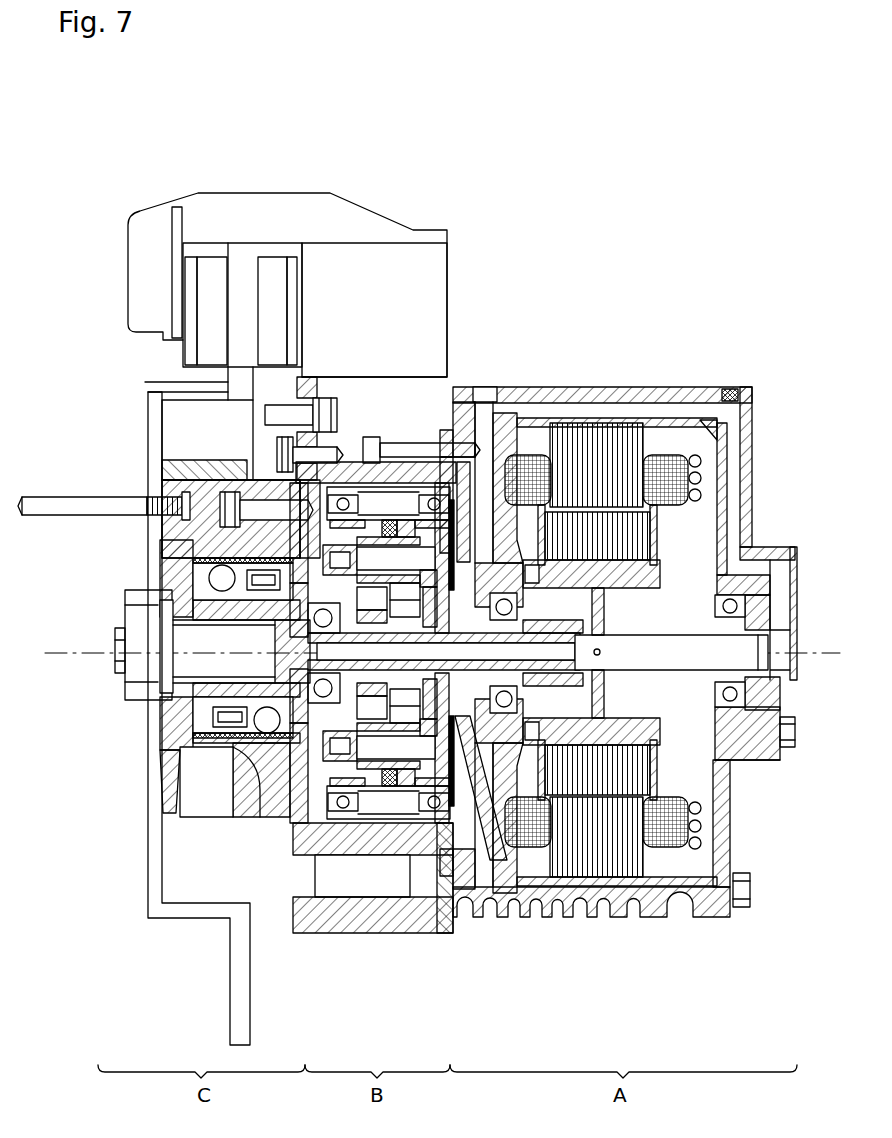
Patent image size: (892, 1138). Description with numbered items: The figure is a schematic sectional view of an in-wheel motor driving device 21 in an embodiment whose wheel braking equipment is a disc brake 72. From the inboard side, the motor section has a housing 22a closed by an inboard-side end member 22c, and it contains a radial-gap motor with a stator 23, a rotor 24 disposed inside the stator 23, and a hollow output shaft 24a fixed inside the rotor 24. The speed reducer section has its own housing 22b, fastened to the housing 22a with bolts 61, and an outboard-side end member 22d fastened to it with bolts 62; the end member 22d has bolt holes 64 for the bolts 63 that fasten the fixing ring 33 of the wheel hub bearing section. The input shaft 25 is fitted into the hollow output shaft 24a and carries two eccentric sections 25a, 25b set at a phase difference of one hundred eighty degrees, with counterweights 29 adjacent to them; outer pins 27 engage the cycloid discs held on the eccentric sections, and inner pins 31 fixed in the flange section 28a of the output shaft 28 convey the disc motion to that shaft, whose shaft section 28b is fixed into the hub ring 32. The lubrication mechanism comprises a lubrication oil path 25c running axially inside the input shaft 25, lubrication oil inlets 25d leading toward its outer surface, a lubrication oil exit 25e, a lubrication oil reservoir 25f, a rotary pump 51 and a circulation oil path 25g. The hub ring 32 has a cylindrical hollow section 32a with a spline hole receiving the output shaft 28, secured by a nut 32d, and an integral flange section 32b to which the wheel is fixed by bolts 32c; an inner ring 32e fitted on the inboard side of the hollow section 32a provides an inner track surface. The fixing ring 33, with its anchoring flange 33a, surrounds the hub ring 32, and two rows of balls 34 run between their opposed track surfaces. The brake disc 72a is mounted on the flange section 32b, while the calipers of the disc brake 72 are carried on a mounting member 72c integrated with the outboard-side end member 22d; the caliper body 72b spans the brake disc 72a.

The in-wheel motor driving device 21 is at (445, 132).
The housing of the motor section 22a is at (610, 591).
The housing of the speed reducer section 22b is at (430, 445).
The inboard-side end member 22c is at (752, 400).
The outboard-side end member 22d is at (480, 440).
The stator 23 is at (625, 405).
The rotor 24 is at (665, 540).
The hollow output shaft 24a is at (700, 588).
The input shaft 25 is at (613, 717).
The eccentric section 25a is at (413, 853).
The eccentric section 25b is at (368, 837).
The lubrication oil path 25c is at (705, 690).
The lubrication oil inlets 25d is at (490, 700).
The lubrication oil exit 25e is at (390, 837).
The lubrication oil reservoir 25f is at (372, 863).
The circulation oil path 25g is at (665, 460).
The outer pins 27 is at (445, 810).
The output shaft 28 is at (156, 667).
The flange section 28a is at (267, 733).
The shaft section 28b is at (222, 596).
The counterweights 29 is at (280, 720).
The inner pins 31 is at (465, 740).
The hub ring 32 is at (118, 578).
The hollow section 32a is at (205, 622).
The flange section 32b is at (215, 520).
The bolts 32c is at (85, 510).
The nut 32d is at (137, 668).
The inner ring 32e is at (165, 645).
The fixing ring 33 is at (190, 540).
The anchoring flange 33a is at (197, 470).
The balls 34 is at (280, 690).
The rotary pump 51 is at (575, 600).
The bolts 61 is at (378, 440).
The bolts 62 is at (285, 418).
The bolts 63 is at (205, 495).
The bolt holes 64 is at (290, 453).
The disc brake 72 is at (310, 282).
The brake disc 72a is at (236, 268).
The caliper body 72b is at (365, 265).
The mounting member 72c is at (330, 395).